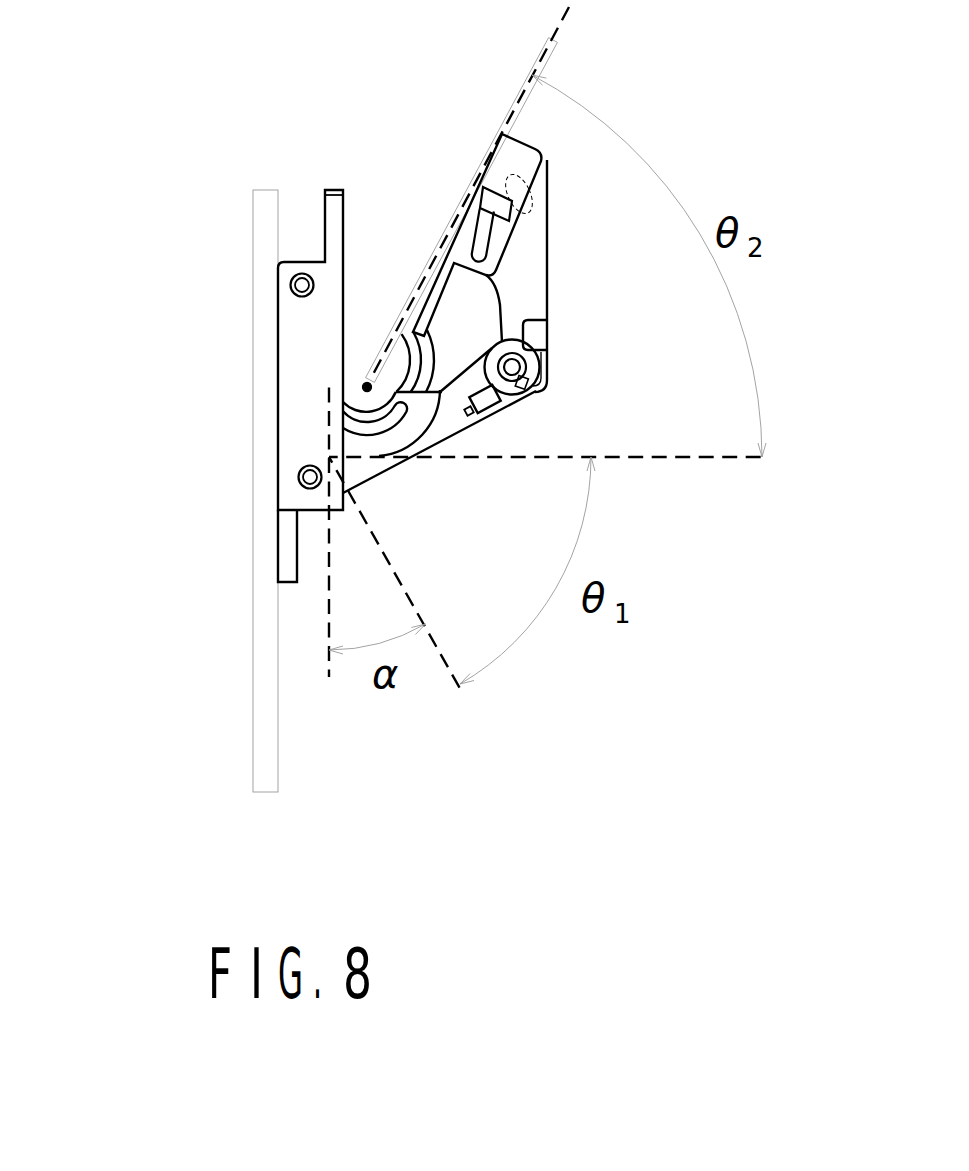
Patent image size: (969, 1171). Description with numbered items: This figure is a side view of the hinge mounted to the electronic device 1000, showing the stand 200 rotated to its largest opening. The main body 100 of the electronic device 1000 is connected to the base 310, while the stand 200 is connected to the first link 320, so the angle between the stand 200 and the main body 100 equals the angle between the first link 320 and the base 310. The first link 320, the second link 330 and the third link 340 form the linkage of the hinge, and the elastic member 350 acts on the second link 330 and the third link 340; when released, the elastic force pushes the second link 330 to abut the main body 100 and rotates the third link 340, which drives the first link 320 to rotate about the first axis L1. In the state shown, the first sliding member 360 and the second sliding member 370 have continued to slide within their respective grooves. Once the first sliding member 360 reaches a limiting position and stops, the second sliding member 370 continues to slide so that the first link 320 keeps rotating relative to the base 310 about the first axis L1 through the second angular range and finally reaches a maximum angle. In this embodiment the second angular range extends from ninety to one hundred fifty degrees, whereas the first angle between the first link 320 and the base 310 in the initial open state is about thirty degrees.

The electronic device 1000 is at (183, 67).
The main body 100 is at (268, 260).
The stand 200 is at (553, 50).
The base 310 is at (333, 222).
The first link 320 is at (468, 231).
The second link 330 is at (460, 415).
The third link 340 is at (523, 274).
The elastic member 350 is at (533, 397).
The first sliding member 360 is at (400, 430).
The second sliding member 370 is at (403, 343).
The first axis L1 is at (363, 387).